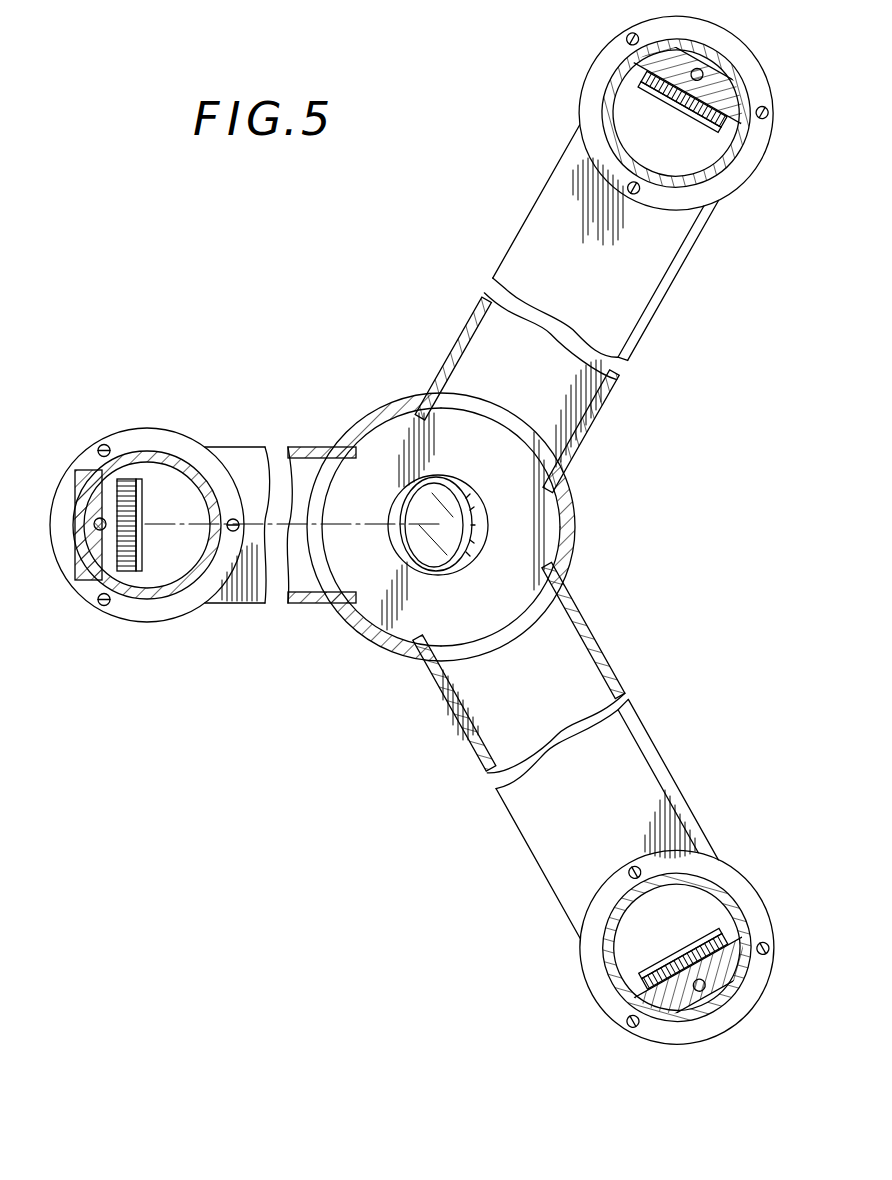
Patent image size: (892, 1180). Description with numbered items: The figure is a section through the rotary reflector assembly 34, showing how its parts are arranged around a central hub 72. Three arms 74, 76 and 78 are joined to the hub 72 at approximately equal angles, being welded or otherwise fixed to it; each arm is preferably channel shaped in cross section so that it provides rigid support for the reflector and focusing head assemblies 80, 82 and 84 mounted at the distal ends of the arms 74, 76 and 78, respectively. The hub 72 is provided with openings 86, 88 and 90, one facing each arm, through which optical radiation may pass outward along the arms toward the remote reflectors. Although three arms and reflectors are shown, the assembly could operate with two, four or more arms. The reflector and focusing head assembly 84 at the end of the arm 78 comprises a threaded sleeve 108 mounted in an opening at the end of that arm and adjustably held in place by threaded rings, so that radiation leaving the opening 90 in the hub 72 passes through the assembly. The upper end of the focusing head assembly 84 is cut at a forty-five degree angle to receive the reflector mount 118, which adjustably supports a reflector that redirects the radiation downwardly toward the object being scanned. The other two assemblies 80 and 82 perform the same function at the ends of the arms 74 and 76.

The rotary reflector assembly 34 is at (377, 388).
The hub 72 is at (570, 510).
The arm 74 is at (608, 663).
The arm 76 is at (653, 303).
The arm 78 is at (250, 455).
The reflector and focusing head assembly 80 is at (743, 888).
The reflector and focusing head assembly 82 is at (735, 180).
The reflector and focusing head assembly 84 is at (160, 440).
The opening 86 is at (523, 617).
The opening 88 is at (517, 428).
The opening 90 is at (322, 510).
The threaded sleeve 108 is at (170, 592).
The reflector mount 118 is at (93, 572).